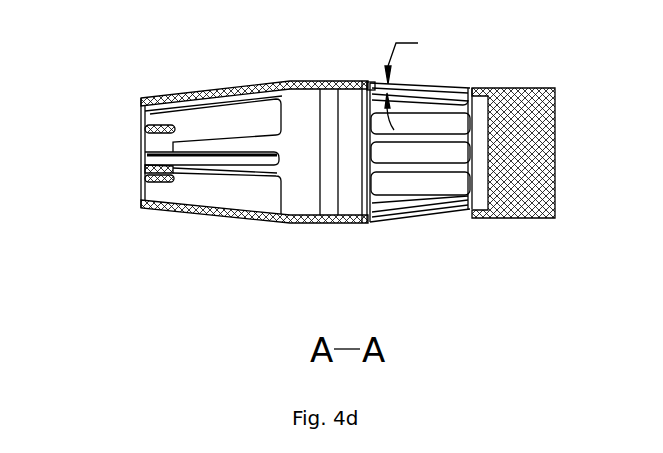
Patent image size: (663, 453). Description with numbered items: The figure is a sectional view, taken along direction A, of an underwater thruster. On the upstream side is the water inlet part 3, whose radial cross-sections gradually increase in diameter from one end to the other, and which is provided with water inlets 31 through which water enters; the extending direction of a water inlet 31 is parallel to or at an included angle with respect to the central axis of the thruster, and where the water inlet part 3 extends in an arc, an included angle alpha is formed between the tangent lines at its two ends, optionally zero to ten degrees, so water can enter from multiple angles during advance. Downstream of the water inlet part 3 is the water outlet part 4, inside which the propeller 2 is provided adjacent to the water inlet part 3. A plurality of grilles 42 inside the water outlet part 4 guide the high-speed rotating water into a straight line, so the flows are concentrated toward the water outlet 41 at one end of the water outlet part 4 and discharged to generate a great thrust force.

The water outlet part 4 is at (212, 91).
The water outlet 41 is at (141, 168).
The grille 42 is at (207, 195).
The propeller 2 is at (332, 200).
The water inlet part 3 is at (441, 86).
The water inlet 31 is at (418, 182).